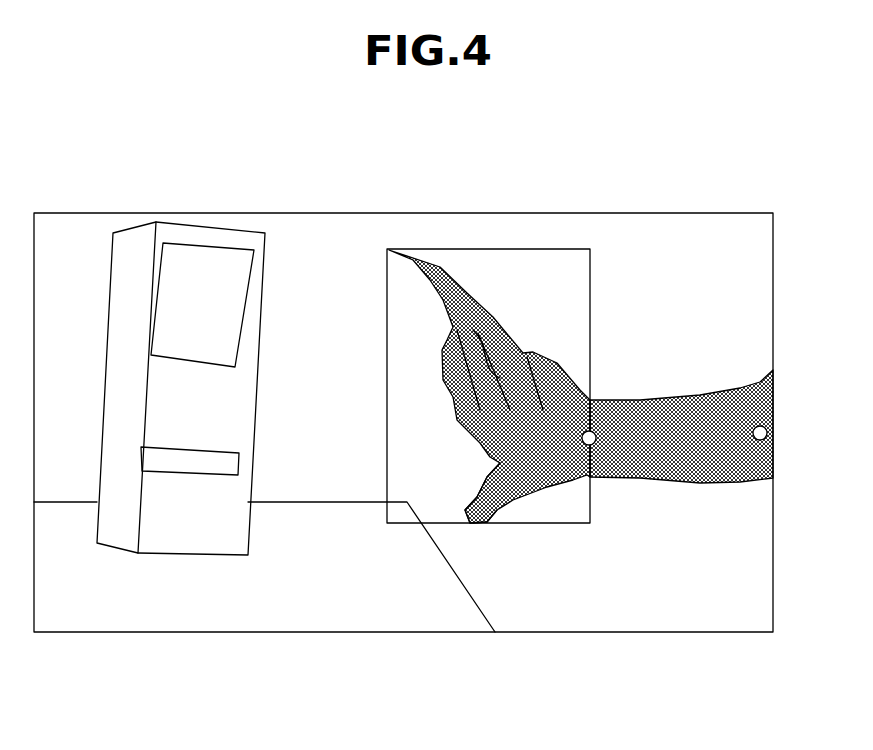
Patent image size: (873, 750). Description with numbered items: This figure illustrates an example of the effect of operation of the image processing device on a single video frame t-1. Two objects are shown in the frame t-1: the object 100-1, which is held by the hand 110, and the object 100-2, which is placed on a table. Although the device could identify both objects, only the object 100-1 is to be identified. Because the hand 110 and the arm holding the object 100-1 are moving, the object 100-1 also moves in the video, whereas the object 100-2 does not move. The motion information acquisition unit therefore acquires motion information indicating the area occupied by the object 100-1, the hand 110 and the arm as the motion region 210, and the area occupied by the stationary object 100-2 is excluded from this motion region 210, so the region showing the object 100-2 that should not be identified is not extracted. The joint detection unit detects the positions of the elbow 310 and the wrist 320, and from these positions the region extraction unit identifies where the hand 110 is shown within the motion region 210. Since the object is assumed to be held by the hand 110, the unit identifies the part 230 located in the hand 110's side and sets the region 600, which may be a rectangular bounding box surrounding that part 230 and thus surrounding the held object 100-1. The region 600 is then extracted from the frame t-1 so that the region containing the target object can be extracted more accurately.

The frame t-1 is at (51, 212).
The object 100-2 is at (178, 275).
The object 100-1 is at (432, 272).
The region 600 is at (573, 245).
The motion region 210 is at (615, 368).
The part located in the hand's side 230 is at (439, 454).
The hand 110 is at (477, 503).
The wrist 320 is at (588, 446).
The elbow 310 is at (760, 440).